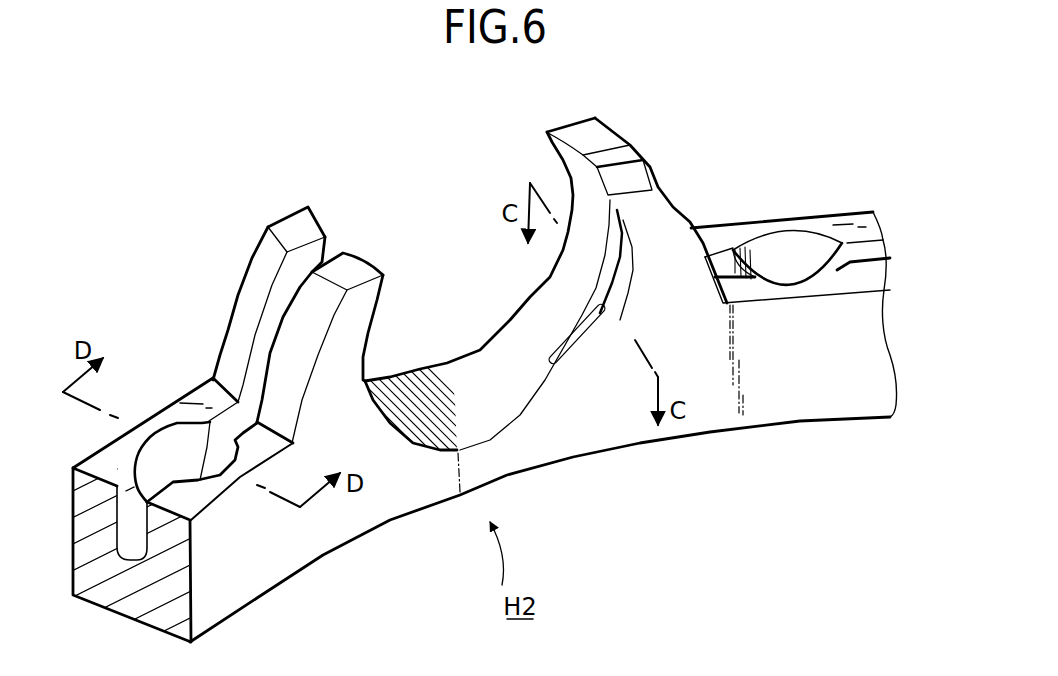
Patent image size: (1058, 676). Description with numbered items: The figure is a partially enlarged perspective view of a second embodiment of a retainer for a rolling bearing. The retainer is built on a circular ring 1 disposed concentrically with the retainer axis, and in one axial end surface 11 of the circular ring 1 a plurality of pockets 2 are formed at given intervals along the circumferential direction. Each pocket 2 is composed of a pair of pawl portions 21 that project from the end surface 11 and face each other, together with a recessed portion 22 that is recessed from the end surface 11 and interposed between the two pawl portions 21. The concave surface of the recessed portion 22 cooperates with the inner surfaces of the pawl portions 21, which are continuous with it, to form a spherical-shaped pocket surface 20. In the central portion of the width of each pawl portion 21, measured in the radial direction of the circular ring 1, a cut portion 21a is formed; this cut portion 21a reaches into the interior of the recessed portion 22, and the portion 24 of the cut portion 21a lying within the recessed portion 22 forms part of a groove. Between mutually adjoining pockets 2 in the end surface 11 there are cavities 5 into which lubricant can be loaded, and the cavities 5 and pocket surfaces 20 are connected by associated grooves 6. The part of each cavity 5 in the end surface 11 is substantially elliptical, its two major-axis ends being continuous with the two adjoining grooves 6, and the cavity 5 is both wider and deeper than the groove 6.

The circular ring 1 is at (818, 385).
The pocket 2 is at (473, 263).
The cavity 5 is at (165, 441).
The groove 6 is at (223, 430).
The end surface 11 is at (874, 209).
The pocket surface 20 is at (445, 361).
The pawl portion 21 is at (287, 227).
The cut portion 21a is at (290, 277).
The recessed portion 22 is at (553, 440).
The portion of the cut portion within the recessed portion 24 is at (612, 318).